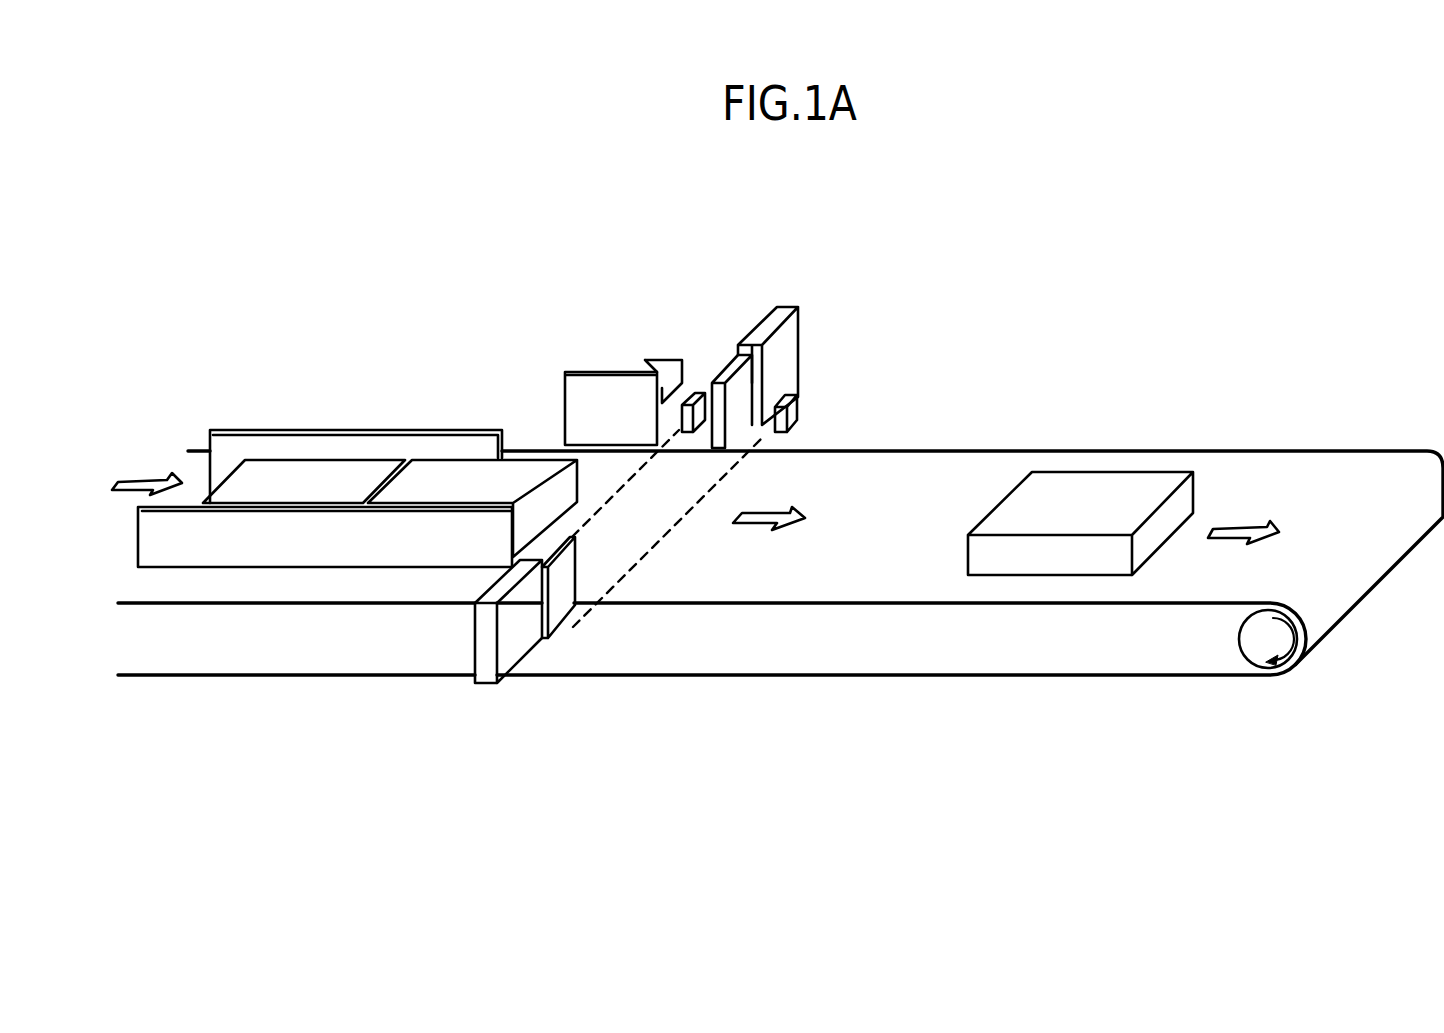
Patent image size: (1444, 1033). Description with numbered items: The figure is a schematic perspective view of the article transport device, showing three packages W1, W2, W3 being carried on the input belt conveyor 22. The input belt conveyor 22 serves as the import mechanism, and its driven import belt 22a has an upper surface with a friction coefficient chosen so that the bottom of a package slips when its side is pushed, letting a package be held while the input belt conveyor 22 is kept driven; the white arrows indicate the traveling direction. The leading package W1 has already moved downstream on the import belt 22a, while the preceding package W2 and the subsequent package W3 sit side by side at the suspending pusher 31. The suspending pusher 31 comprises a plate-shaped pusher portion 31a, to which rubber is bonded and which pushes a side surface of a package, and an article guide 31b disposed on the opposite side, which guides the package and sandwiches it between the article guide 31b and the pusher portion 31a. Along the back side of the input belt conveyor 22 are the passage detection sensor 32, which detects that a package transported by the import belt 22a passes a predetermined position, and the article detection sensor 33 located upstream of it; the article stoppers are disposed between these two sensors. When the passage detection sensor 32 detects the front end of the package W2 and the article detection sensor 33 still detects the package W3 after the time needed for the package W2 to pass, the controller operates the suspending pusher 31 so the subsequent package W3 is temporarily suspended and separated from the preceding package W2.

The input belt conveyor 22 is at (1340, 473).
The import belt 22a is at (912, 526).
The suspending pusher 31 is at (626, 315).
The pusher portion 31a is at (593, 388).
The article guide 31b is at (318, 556).
The passage detection sensor 32 is at (793, 412).
The article detection sensor 33 is at (699, 397).
The package W1 is at (1092, 478).
The package W2 is at (470, 480).
The package W3 is at (324, 478).